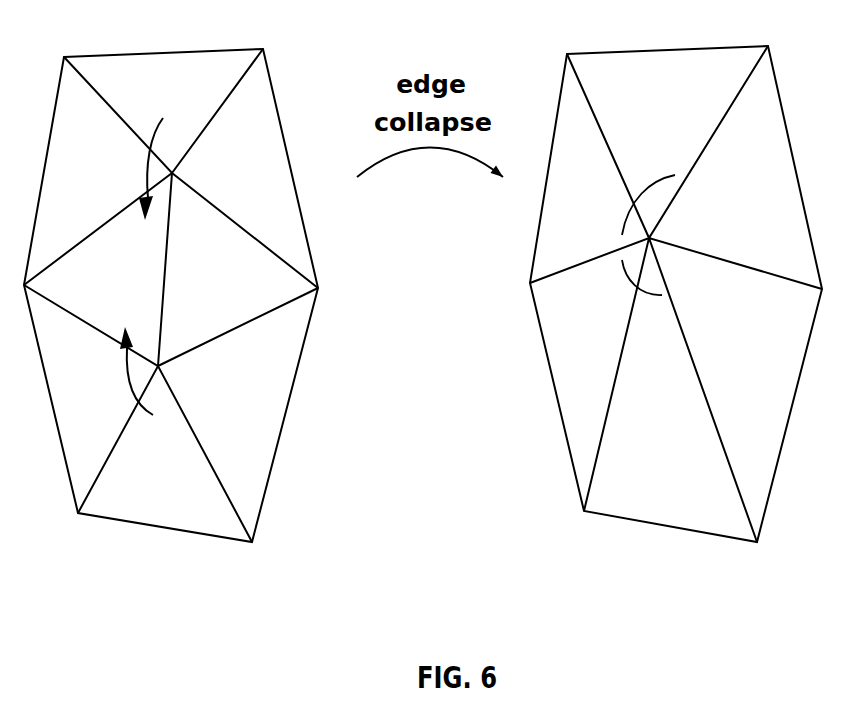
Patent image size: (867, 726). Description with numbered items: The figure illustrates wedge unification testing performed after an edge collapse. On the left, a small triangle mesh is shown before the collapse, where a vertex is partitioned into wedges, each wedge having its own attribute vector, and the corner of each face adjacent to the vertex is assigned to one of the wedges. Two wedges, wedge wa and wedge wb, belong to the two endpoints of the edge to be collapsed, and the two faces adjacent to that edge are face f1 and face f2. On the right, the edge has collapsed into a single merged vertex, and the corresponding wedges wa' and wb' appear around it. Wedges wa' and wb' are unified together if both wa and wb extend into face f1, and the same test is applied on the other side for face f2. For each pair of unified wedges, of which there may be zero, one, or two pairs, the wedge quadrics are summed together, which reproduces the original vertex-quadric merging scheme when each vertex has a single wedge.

The face f1 is at (98, 269).
The face f2 is at (238, 269).
The wedge wa is at (137, 169).
The wedge wb is at (127, 371).
The wedge wa' is at (636, 205).
The wedge wb' is at (629, 284).